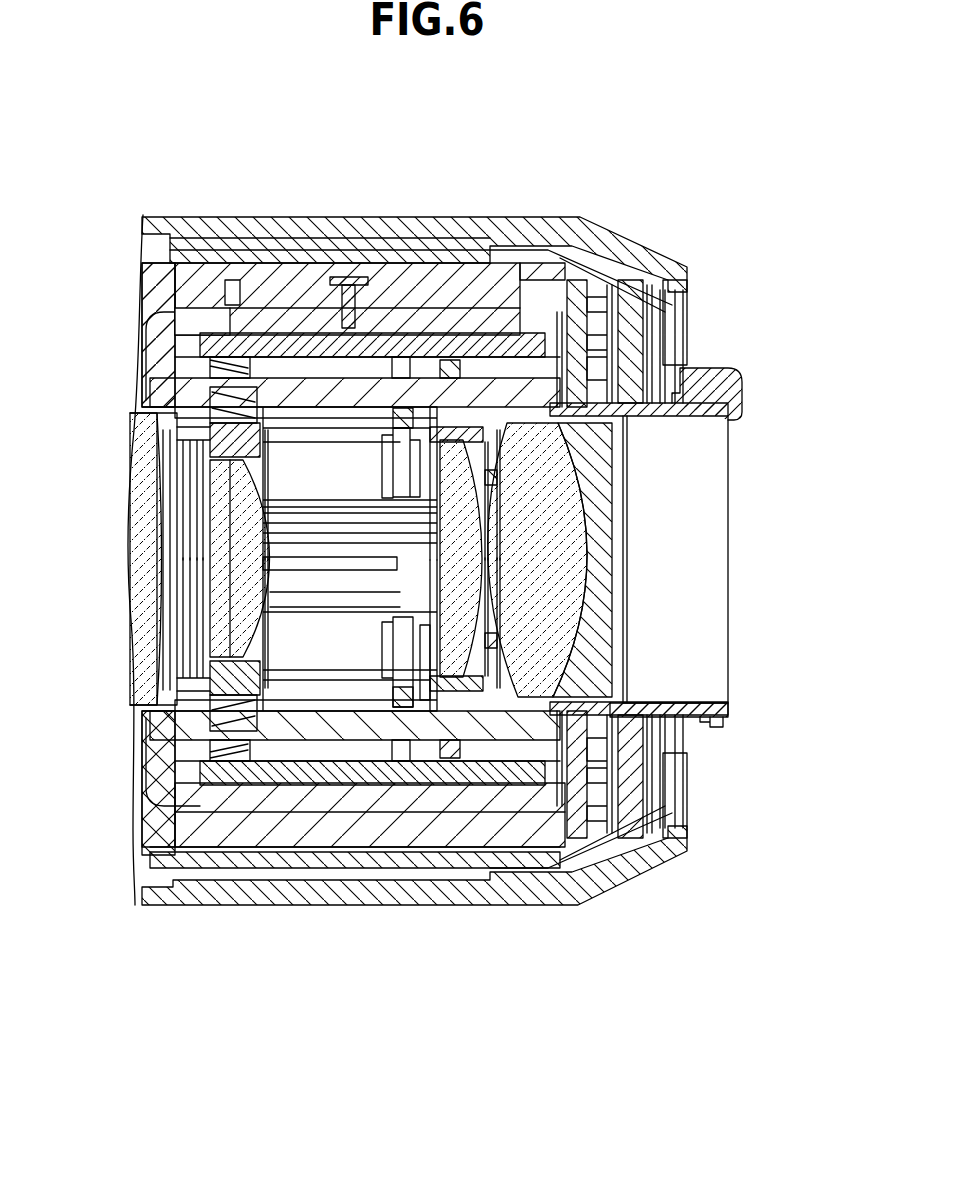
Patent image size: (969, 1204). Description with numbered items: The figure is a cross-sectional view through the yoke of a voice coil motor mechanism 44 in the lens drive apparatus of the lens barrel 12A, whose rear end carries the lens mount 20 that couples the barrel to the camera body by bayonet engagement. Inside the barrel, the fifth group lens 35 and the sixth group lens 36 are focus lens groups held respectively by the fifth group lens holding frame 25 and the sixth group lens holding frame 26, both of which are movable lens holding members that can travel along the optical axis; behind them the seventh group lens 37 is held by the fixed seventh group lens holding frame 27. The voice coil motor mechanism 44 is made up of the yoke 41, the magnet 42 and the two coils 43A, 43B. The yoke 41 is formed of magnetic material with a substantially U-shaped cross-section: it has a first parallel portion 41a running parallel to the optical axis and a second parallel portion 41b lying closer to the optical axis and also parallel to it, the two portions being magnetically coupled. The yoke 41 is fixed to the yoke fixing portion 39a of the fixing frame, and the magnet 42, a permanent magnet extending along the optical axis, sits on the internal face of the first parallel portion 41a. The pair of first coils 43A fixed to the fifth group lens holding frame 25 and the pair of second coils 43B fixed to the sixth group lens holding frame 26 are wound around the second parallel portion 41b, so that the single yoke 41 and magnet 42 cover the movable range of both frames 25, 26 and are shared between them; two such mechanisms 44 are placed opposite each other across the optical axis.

The lens barrel 12A is at (592, 137).
The lens mount 20 is at (716, 727).
The fifth group lens holding frame 25 is at (178, 690).
The sixth group lens holding frame 26 is at (505, 765).
The seventh group lens holding frame 27 is at (640, 445).
The fifth group lens 35 is at (338, 790).
The sixth group lens 36 is at (558, 755).
The seventh group lens 37 is at (555, 600).
The yoke fixing portion 39a is at (392, 290).
The yoke 41 is at (245, 160).
The first parallel portion 41a is at (203, 318).
The second parallel portion 41b is at (167, 312).
The magnet 42 is at (332, 400).
The first coils 43A is at (283, 440).
The second coils 43B is at (447, 362).
The voice coil motor mechanism 44 is at (488, 132).